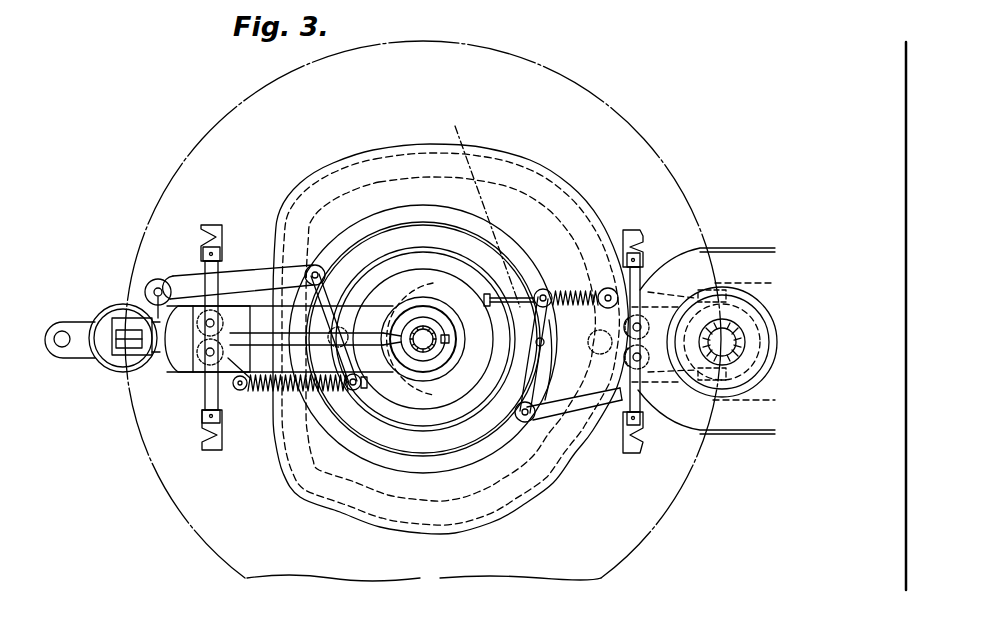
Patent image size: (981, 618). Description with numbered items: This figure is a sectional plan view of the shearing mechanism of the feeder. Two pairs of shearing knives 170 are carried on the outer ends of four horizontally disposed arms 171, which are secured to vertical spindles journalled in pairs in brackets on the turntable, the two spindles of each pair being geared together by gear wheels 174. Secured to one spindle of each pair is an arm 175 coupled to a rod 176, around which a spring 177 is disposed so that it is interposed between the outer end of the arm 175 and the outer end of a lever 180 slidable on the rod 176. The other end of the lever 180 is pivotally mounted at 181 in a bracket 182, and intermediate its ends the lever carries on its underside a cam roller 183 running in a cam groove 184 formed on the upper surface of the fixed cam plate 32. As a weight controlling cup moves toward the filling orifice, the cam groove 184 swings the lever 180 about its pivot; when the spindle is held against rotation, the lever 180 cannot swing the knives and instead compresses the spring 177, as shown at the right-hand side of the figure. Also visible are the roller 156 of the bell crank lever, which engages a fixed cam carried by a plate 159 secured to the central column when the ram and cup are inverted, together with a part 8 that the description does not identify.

The arm 8 is at (97, 362).
The fixed cam plate 32 is at (563, 473).
The roller 156 is at (142, 297).
The plate 159 is at (276, 362).
The shearing knives 170 is at (209, 225).
The horizontally disposed arms 171 is at (213, 288).
The gear wheels 174 is at (565, 472).
The arm 175 is at (205, 386).
The rod 176 is at (543, 289).
The spring 177 is at (560, 297).
The lever 180 is at (318, 268).
The pivot 181 is at (315, 265).
The bracket 182 is at (253, 279).
The cam roller 183 is at (474, 206).
The cam groove 184 is at (432, 448).